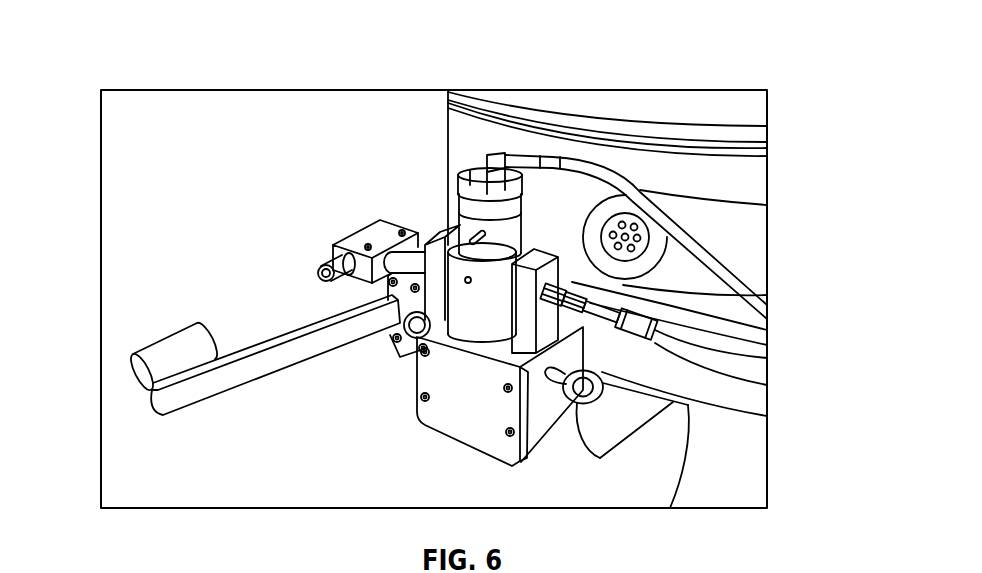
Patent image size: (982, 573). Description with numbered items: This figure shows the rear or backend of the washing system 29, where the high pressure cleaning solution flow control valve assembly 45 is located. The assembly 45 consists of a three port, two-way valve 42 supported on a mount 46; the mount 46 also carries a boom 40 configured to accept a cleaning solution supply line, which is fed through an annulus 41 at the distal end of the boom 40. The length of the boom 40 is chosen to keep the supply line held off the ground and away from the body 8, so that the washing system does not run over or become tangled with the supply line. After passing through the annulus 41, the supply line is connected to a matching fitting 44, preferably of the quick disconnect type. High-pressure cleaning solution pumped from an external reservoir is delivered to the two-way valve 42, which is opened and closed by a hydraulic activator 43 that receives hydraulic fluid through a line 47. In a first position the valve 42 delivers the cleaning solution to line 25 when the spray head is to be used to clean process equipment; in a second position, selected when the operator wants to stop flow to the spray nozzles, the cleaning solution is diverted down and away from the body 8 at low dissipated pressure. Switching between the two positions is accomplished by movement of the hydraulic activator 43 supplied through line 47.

The body 8 is at (715, 222).
The line 25 is at (748, 354).
The washing system 29 is at (558, 88).
The boom 40 is at (293, 355).
The annulus 41 is at (175, 363).
The two-way valve 42 is at (486, 294).
The hydraulic activator 43 is at (484, 215).
The fitting 44 is at (325, 261).
The flow control valve assembly 45 is at (463, 403).
The mount 46 is at (572, 354).
The line 47 is at (607, 179).